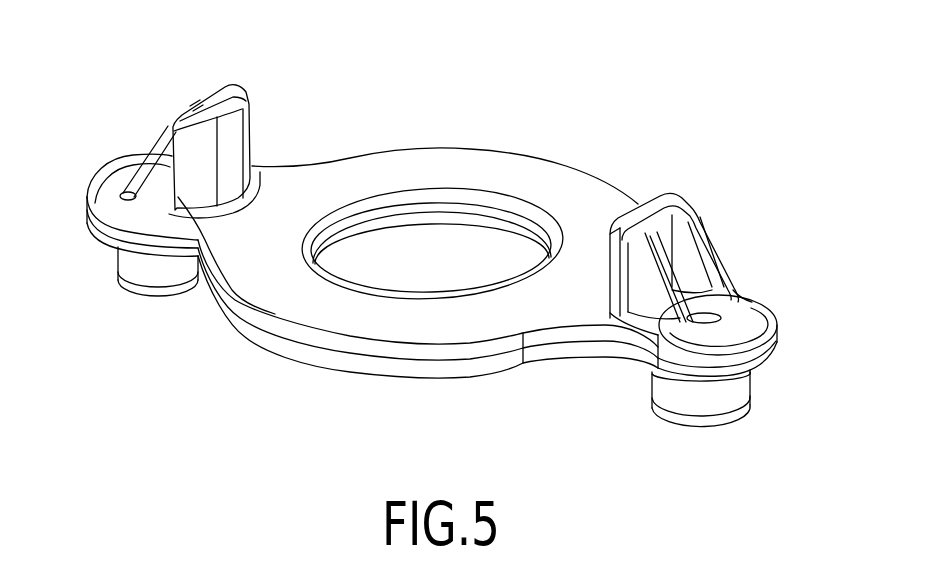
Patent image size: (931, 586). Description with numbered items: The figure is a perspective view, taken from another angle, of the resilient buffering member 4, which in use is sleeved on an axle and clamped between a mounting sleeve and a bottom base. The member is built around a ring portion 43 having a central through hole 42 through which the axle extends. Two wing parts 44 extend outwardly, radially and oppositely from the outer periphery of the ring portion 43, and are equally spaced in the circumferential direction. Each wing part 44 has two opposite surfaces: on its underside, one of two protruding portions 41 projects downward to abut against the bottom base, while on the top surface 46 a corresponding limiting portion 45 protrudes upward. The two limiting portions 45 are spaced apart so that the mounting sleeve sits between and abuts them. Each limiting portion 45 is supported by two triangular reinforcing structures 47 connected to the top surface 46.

The resilient buffering member 4 is at (85, 73).
The protruding portions 41 is at (150, 277).
The central through hole 42 is at (430, 227).
The ring portion 43 is at (543, 148).
The wing parts 44 is at (91, 214).
The limiting portions 45 is at (233, 132).
The top surface 46 is at (325, 320).
The reinforcing structures 47 is at (155, 148).